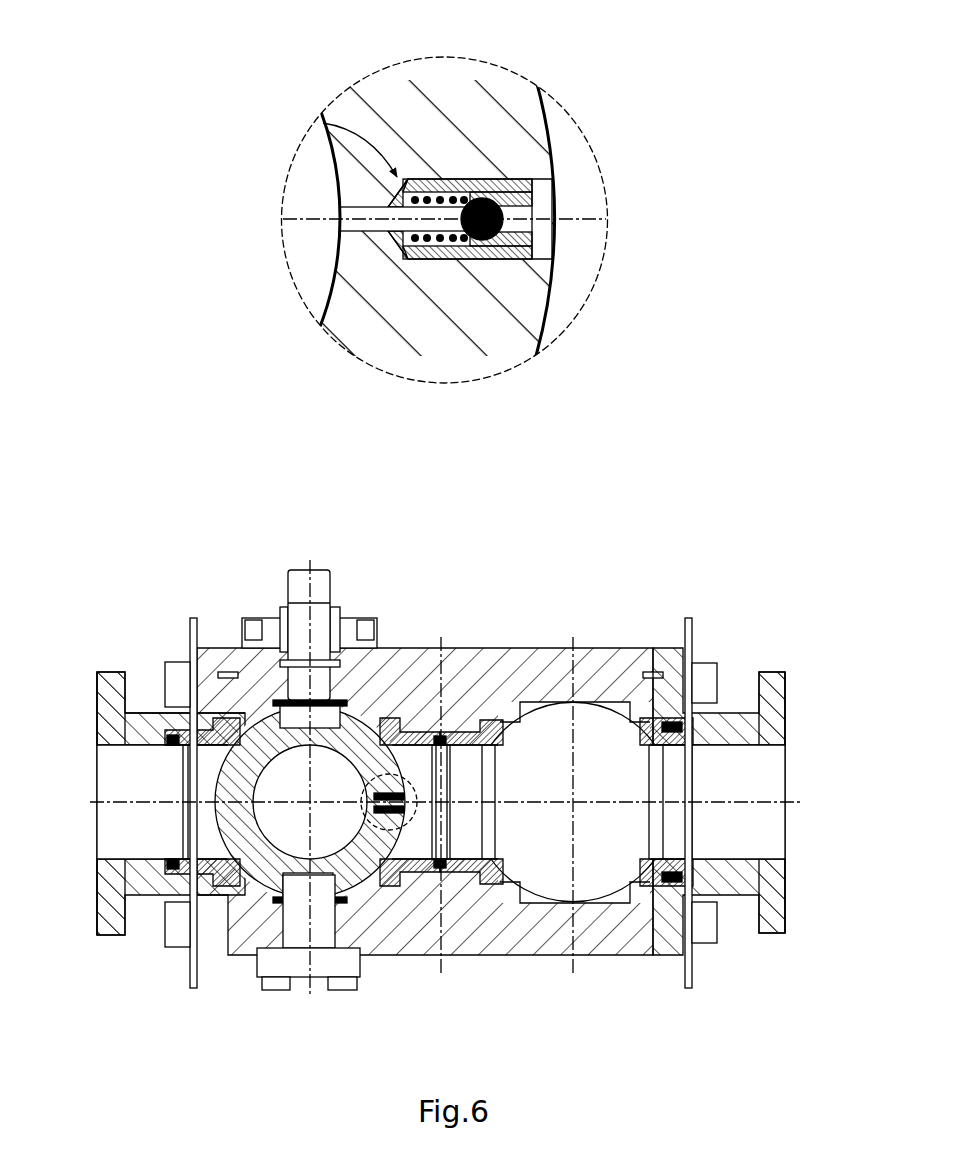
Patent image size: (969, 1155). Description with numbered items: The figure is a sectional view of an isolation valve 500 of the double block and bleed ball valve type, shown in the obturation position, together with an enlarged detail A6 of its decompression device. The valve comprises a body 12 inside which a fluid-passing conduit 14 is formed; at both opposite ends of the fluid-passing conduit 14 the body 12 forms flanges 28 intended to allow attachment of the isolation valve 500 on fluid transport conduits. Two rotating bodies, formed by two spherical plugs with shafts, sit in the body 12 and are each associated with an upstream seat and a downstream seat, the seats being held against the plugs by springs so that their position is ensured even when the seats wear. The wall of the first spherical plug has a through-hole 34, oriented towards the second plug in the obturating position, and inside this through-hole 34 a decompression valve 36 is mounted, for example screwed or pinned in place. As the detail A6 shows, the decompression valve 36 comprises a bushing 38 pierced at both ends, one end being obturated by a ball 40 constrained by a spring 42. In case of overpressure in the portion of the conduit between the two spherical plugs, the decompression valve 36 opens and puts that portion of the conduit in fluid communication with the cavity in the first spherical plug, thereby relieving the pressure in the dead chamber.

The isolation valve 500 is at (226, 556).
The body 12 is at (458, 656).
The fluid-passing conduit 14 is at (583, 178).
The flanges 28 is at (97, 697).
The through-hole 34 is at (342, 226).
The decompression valve 36 is at (323, 123).
The bushing 38 is at (462, 179).
The ball 40 is at (503, 222).
The spring 42 is at (462, 252).
The detail region A6 is at (372, 76).